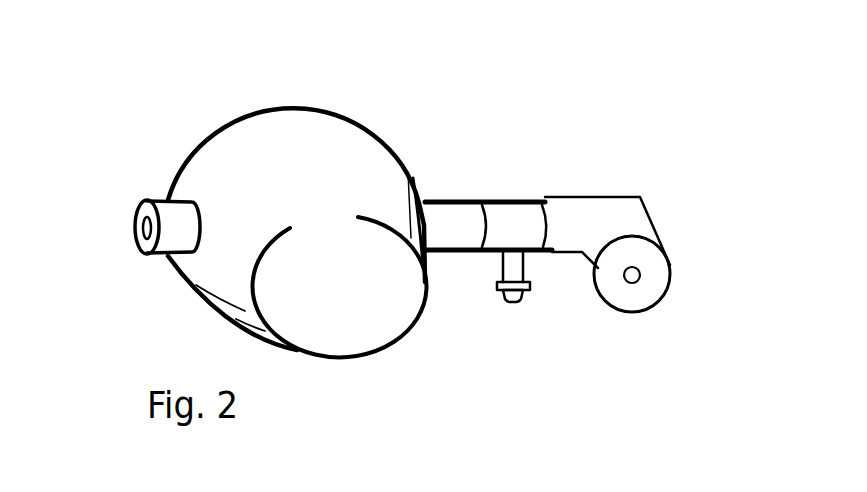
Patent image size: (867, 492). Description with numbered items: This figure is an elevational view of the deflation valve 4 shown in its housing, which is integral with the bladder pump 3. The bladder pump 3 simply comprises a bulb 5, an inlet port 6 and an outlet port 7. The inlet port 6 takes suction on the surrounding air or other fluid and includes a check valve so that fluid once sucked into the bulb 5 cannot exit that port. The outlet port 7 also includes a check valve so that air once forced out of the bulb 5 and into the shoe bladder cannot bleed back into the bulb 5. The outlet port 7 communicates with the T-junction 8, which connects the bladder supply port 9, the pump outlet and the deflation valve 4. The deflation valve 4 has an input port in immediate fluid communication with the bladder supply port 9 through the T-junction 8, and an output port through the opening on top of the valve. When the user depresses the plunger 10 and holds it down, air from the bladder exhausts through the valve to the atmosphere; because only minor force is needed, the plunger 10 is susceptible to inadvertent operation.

The bladder pump 3 is at (283, 105).
The deflation valve 4 is at (665, 235).
The bulb 5 is at (233, 118).
The inlet port 6 is at (136, 243).
The outlet port 7 is at (460, 254).
The T-junction 8 is at (512, 180).
The bladder supply port 9 is at (515, 303).
The plunger 10 is at (640, 277).